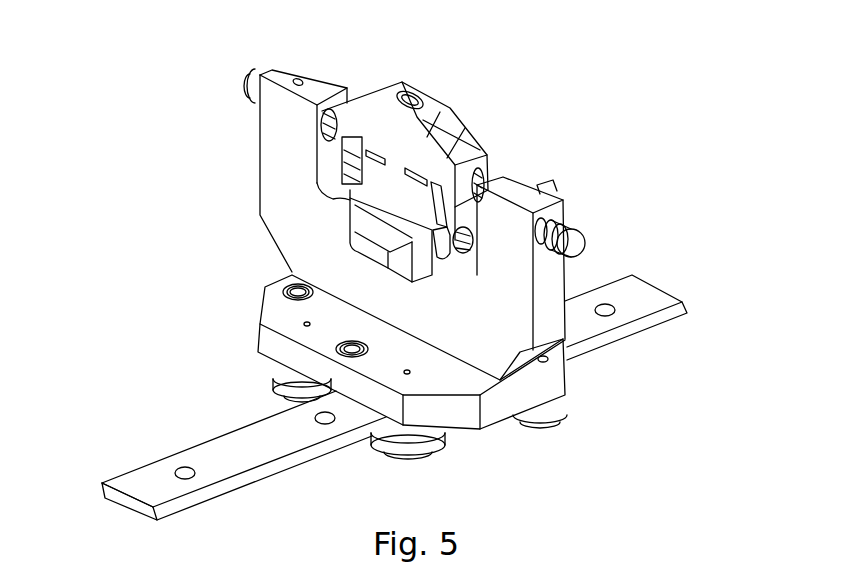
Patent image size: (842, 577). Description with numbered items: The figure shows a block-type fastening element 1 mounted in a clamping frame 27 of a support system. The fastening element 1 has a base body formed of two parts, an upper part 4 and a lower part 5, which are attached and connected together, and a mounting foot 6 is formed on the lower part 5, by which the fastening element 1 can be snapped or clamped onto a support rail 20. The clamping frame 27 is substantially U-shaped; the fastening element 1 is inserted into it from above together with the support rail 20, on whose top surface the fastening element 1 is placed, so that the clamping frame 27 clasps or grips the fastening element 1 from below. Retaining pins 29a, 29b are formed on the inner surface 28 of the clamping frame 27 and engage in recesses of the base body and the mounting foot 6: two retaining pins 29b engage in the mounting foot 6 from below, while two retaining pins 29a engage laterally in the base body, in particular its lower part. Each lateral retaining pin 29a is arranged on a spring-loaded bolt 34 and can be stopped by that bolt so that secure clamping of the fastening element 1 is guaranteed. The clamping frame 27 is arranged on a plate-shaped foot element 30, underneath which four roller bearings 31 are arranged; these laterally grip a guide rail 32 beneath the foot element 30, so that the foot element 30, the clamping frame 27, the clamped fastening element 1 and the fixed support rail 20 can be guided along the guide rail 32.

The fastening element 1 is at (465, 112).
The upper part 4 is at (399, 148).
The lower part 5 is at (399, 196).
The mounting foot 6 is at (315, 186).
The support rail 20 is at (366, 217).
The clamping frame 27 is at (278, 158).
The inner surface 28 is at (316, 148).
The retaining pin 29a is at (327, 98).
The retaining pin 29b is at (443, 258).
The foot element 30 is at (285, 313).
The roller bearing 31 is at (290, 392).
The guide rail 32 is at (217, 457).
The spring-loaded bolt 34 is at (242, 92).